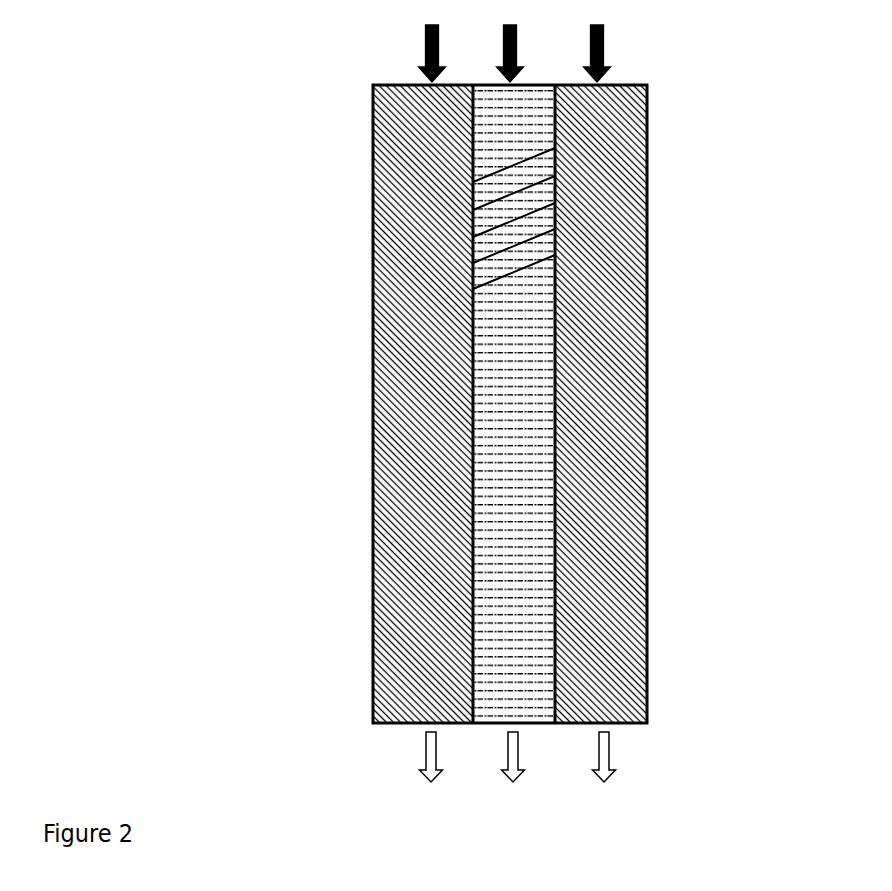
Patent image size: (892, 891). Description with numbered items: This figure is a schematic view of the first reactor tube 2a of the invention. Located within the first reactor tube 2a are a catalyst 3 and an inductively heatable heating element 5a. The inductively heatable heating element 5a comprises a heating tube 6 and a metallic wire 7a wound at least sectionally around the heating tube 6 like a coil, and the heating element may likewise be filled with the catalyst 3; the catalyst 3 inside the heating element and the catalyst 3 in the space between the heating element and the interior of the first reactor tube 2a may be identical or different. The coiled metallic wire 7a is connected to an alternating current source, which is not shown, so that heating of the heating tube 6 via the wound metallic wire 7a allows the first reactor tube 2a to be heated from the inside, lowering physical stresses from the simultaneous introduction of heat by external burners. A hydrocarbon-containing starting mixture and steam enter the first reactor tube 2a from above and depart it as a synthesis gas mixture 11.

The first reactor tube 2a is at (688, 363).
The catalyst 3 is at (612, 525).
The inductively heatable heating element 5a is at (557, 283).
The heating tube 6 is at (557, 360).
The metallic wire 7a is at (473, 223).
The synthesis gas mixture 11 is at (612, 750).